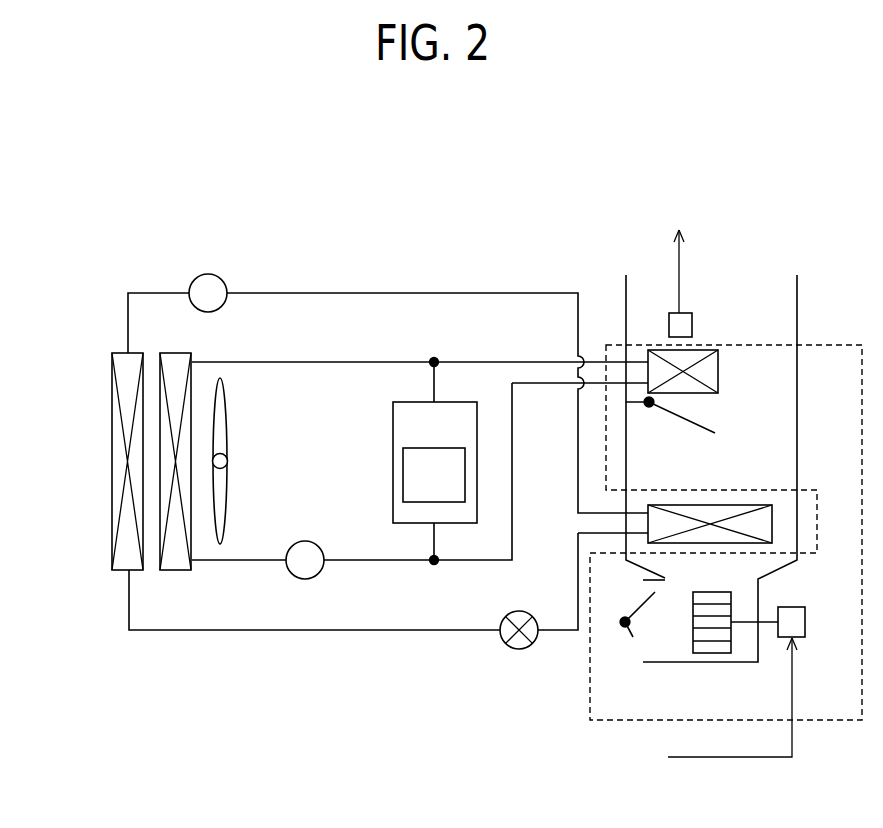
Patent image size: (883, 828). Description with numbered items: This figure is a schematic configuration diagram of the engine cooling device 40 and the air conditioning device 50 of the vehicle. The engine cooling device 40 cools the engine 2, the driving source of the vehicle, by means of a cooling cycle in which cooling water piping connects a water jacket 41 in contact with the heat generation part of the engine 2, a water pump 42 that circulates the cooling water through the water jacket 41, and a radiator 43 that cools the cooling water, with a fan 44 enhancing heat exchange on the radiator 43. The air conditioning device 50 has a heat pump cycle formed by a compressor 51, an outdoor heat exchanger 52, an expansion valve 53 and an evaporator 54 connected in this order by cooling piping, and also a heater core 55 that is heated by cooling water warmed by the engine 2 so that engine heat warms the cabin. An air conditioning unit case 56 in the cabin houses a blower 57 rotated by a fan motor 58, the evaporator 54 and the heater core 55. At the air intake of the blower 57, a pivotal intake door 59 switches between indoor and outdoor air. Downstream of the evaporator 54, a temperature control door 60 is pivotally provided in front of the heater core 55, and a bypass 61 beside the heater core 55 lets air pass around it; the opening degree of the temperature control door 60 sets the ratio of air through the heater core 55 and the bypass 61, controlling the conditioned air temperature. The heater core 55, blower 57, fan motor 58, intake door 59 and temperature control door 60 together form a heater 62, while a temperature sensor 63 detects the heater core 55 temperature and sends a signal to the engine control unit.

The engine 2 is at (434, 475).
The engine cooling device 40 is at (282, 352).
The water jacket 41 is at (411, 462).
The water pump 42 is at (316, 541).
The radiator 43 is at (192, 570).
The fan 44 is at (226, 430).
The air conditioning device 50 is at (156, 270).
The compressor 51 is at (220, 277).
The outdoor heat exchanger 52 is at (112, 366).
The expansion valve 53 is at (526, 613).
The evaporator 54 is at (755, 505).
The heater core 55 is at (700, 348).
The air conditioning unit case 56 is at (798, 430).
The blower 57 is at (713, 655).
The fan motor 58 is at (805, 608).
The intake door 59 is at (646, 595).
The temperature control door 60 is at (665, 412).
The bypass 61 is at (756, 373).
The heater 62 is at (827, 345).
The temperature sensor 63 is at (669, 320).